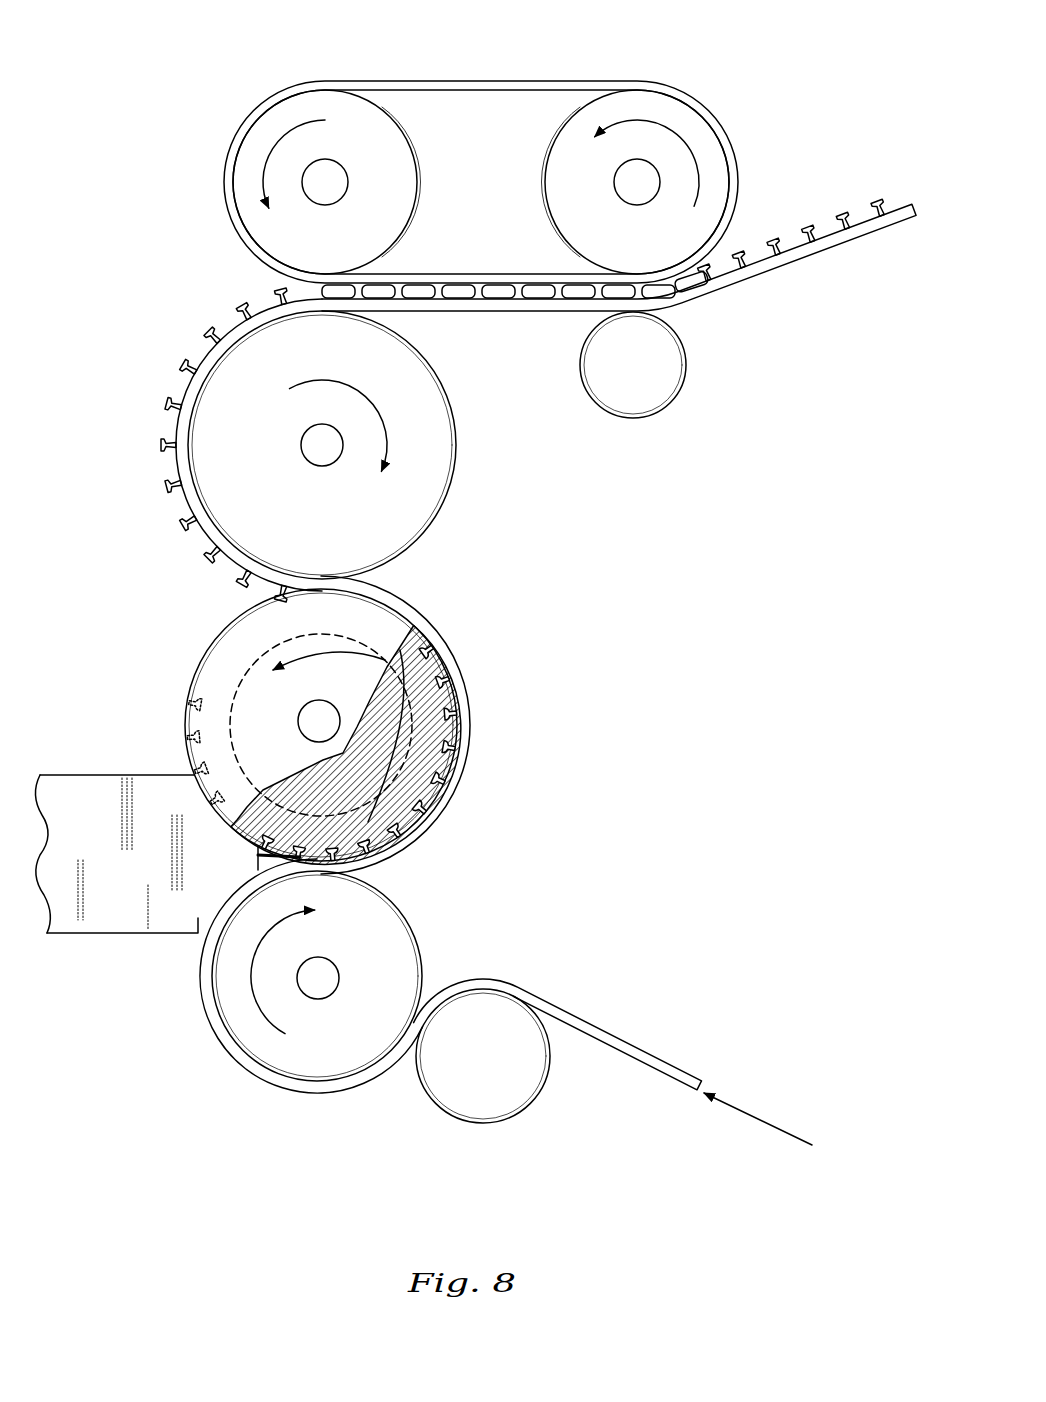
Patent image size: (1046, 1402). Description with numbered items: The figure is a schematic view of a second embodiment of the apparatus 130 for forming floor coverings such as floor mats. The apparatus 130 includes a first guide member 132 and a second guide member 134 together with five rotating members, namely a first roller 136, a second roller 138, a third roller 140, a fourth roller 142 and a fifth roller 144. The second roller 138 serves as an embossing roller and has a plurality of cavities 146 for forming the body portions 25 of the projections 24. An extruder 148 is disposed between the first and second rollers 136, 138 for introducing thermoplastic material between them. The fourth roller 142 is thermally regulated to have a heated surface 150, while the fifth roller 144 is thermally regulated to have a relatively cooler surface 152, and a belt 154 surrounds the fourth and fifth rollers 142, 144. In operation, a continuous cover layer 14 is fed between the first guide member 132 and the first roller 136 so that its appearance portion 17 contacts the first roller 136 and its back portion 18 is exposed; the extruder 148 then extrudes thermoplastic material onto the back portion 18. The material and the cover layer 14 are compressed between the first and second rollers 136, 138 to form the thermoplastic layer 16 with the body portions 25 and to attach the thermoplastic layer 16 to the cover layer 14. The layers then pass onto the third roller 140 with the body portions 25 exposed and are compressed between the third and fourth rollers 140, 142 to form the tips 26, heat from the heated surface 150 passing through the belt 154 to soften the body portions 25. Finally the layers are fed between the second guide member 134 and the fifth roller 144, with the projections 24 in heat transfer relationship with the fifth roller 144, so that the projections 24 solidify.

The cover layer 14 is at (716, 1077).
The thermoplastic layer 16 is at (172, 457).
The appearance portion 17 is at (603, 1032).
The back portion 18 is at (305, 1092).
The projections 24 is at (790, 230).
The body portions 25 is at (178, 400).
The tips 26 is at (828, 222).
The apparatus 130 is at (730, 592).
The first guide member 132 is at (543, 1092).
The second guide member 134 is at (683, 373).
The first roller 136 is at (421, 942).
The second roller 138 is at (197, 665).
The third roller 140 is at (445, 499).
The fourth roller 142 is at (393, 119).
The fifth roller 144 is at (568, 120).
The cavities 146 is at (175, 742).
The extruder 148 is at (157, 937).
The heated surface 150 is at (418, 222).
The relatively cooler surface 152 is at (542, 167).
The belt 154 is at (575, 81).